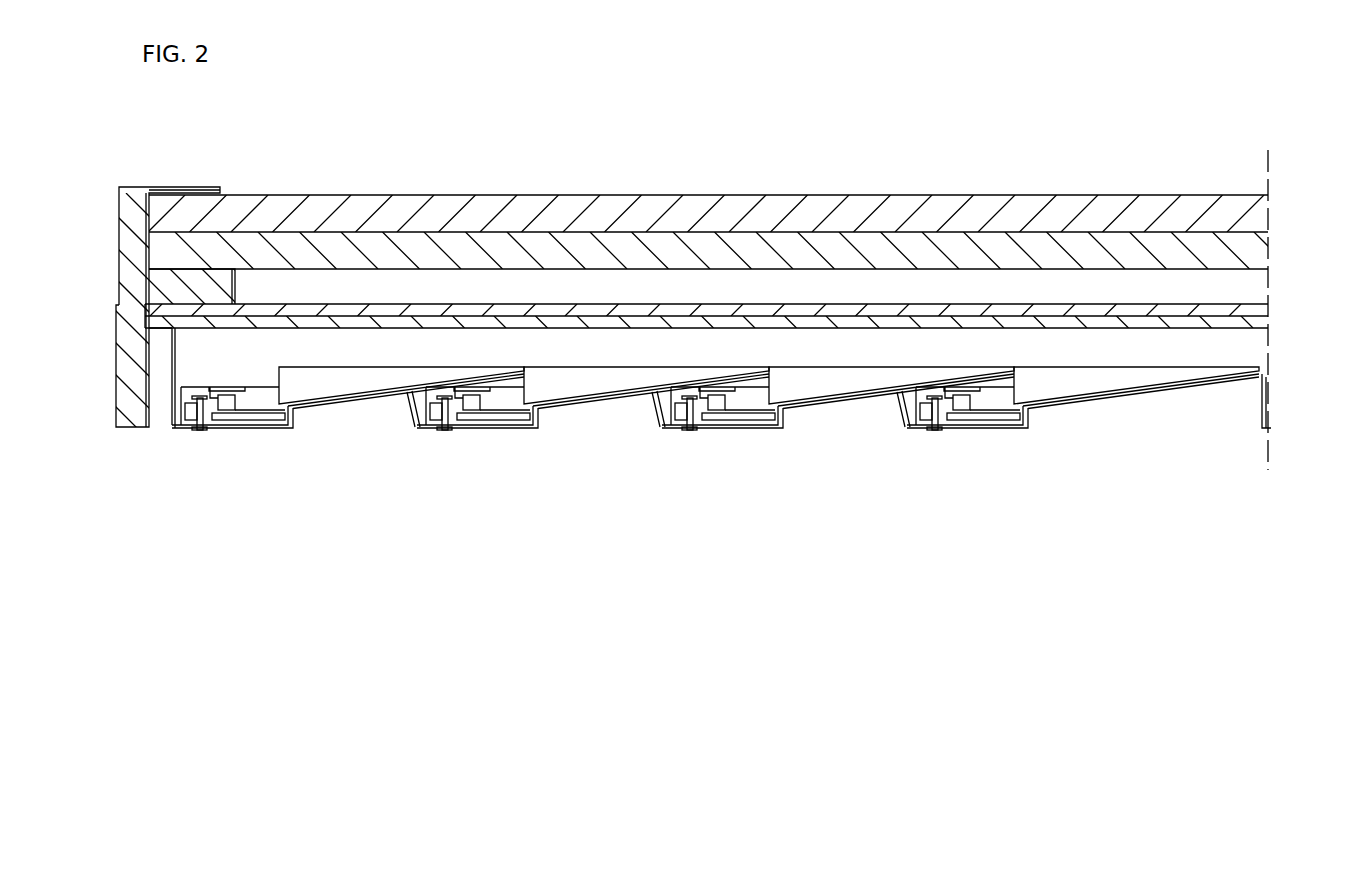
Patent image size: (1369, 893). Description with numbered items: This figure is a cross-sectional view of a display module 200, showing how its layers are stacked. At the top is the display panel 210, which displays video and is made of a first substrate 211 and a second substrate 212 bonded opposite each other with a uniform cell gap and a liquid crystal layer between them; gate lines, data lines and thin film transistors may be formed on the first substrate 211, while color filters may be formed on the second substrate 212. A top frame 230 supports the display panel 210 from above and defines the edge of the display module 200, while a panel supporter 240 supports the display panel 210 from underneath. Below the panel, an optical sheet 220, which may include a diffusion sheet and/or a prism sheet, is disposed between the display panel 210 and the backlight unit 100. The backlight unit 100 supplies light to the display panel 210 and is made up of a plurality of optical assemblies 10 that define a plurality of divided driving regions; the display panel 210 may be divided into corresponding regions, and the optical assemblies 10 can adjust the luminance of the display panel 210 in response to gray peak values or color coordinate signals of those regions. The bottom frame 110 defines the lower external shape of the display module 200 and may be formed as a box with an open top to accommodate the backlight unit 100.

The optical assembly 10 is at (305, 392).
The backlight unit 100 is at (491, 446).
The bottom frame 110 is at (823, 407).
The display module 200 is at (727, 178).
The display panel 210 is at (727, 178).
The first substrate 211 is at (1012, 250).
The second substrate 212 is at (927, 213).
The optical sheet 220 is at (1269, 304).
The top frame 230 is at (176, 188).
The panel supporter 240 is at (132, 413).